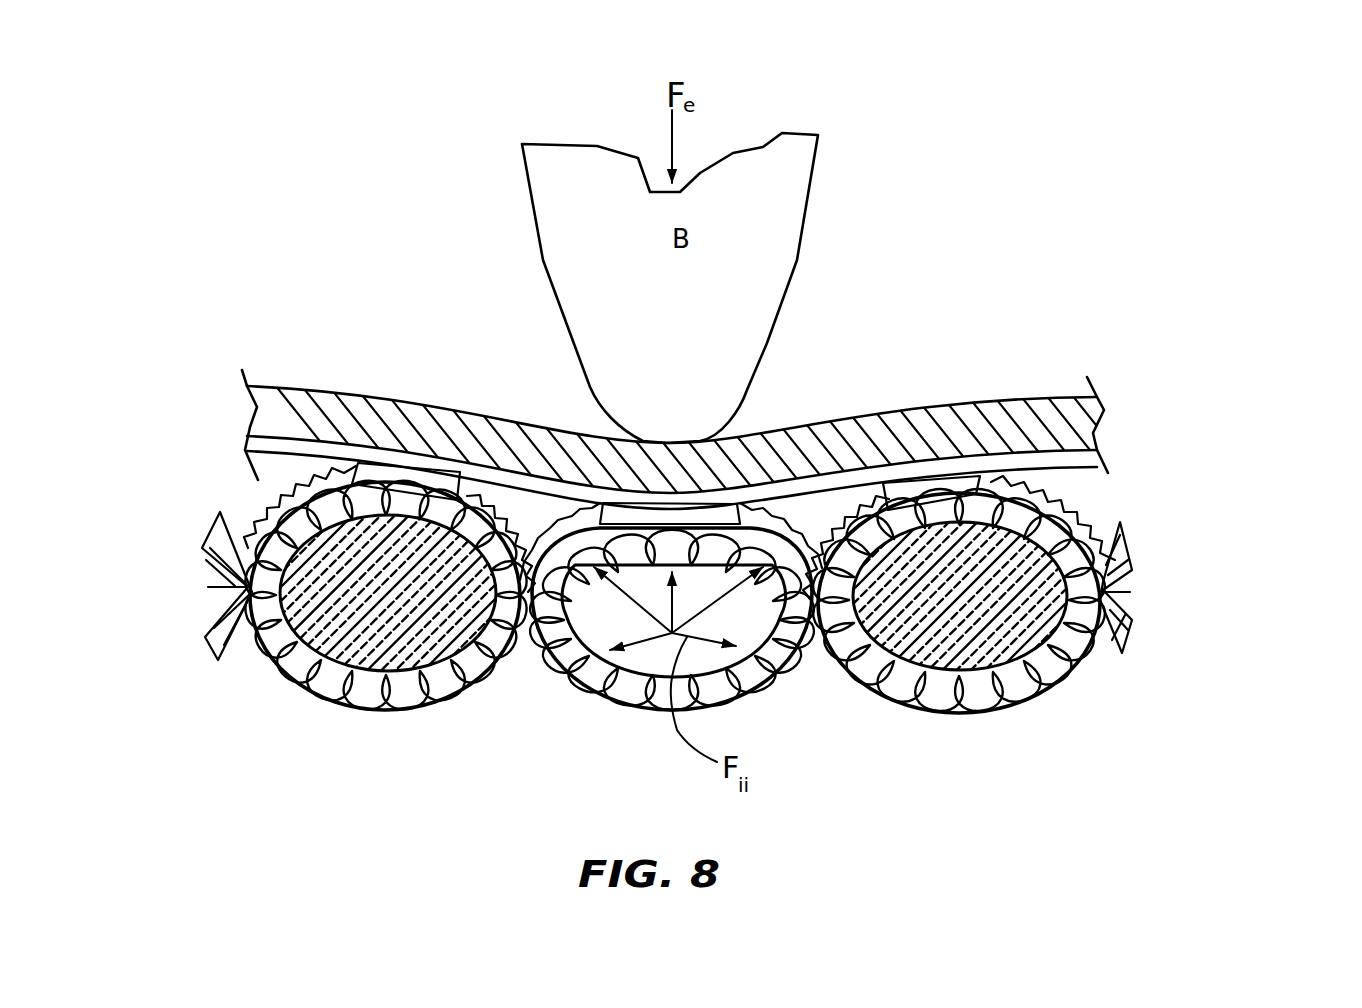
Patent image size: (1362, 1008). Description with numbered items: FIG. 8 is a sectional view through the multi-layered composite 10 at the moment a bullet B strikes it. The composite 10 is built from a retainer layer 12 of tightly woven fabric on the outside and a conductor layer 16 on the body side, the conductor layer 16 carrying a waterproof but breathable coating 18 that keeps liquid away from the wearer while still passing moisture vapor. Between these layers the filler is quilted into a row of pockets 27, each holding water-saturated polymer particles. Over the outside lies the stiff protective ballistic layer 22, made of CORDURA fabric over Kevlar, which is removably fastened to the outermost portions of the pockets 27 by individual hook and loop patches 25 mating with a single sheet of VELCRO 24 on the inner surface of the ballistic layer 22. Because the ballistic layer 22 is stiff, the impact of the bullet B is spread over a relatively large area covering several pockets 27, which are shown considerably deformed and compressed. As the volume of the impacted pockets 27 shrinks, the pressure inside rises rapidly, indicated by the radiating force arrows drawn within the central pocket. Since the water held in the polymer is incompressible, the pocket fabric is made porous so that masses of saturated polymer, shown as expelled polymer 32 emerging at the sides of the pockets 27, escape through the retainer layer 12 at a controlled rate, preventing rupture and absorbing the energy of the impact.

The multi-layered composite 10 is at (1152, 400).
The retainer layer 12 is at (397, 711).
The conductor layer 16 is at (748, 697).
The waterproof but breathable coating 18 is at (620, 700).
The protective ballistic layer 22 is at (792, 430).
The sheet of VELCRO 24 is at (535, 481).
The hook and loop fasteners 25 is at (899, 496).
The pockets 27 is at (313, 690).
The expelled polymer 32 is at (272, 502).